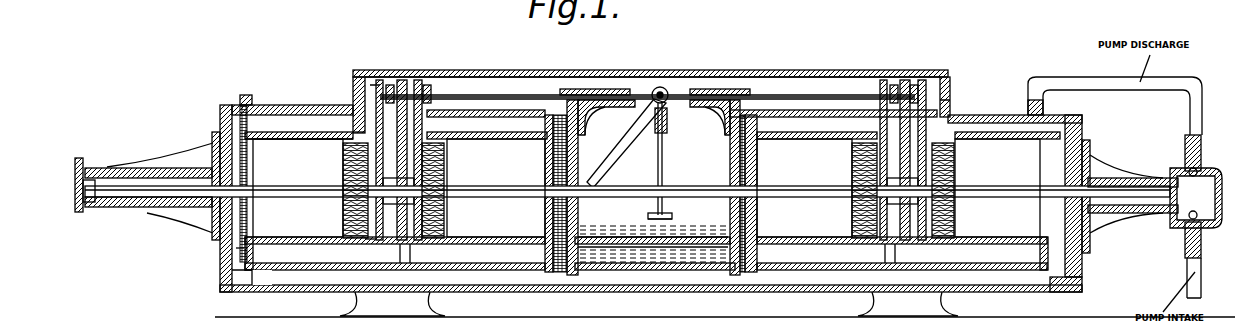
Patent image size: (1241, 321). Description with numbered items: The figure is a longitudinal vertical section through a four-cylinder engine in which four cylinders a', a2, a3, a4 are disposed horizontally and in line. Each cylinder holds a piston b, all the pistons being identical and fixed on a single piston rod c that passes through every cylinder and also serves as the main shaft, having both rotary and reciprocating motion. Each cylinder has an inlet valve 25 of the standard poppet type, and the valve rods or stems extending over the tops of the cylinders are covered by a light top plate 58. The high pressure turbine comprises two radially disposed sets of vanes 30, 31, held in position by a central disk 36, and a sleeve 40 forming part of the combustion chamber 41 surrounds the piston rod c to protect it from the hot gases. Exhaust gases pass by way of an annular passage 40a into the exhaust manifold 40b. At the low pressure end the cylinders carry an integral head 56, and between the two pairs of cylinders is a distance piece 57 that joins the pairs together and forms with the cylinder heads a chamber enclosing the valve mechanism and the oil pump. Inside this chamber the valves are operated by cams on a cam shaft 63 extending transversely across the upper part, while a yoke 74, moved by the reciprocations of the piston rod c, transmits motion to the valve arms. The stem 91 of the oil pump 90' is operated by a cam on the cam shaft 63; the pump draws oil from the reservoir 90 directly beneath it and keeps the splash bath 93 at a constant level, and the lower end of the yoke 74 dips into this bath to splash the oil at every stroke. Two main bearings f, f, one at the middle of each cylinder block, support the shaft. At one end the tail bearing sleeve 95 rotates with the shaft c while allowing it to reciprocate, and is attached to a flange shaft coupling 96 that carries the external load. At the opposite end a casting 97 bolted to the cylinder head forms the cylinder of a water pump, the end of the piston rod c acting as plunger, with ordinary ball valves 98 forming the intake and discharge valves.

The flange shaft coupling 96 is at (78, 163).
The sleeve 95 is at (105, 168).
The piston rod c is at (156, 236).
The annular passage 40a is at (256, 70).
The exhaust manifold 40b is at (262, 280).
The central disk 36 is at (350, 132).
The vanes 30 is at (345, 140).
The vanes 31 is at (353, 72).
The combustion chamber 41 is at (375, 83).
The inlet valve 25 is at (428, 82).
The top plate 58 is at (752, 74).
The cam shaft 63 is at (665, 90).
The yoke 74 is at (615, 174).
The stem 91 is at (660, 166).
The distance piece 57 is at (596, 106).
The cylinder a' is at (298, 188).
The cylinder a2 is at (500, 164).
The cylinder a3 is at (811, 167).
The cylinder a4 is at (1001, 167).
The piston b is at (450, 213).
The sleeve 40 is at (365, 240).
The main bearing f is at (403, 247).
The integral head 56 is at (238, 250).
The reservoir 90 is at (653, 282).
The oil pump 90' is at (640, 213).
The splash bath 93 is at (690, 232).
The casting 97 is at (1152, 213).
The ball valves 98 is at (1197, 175).